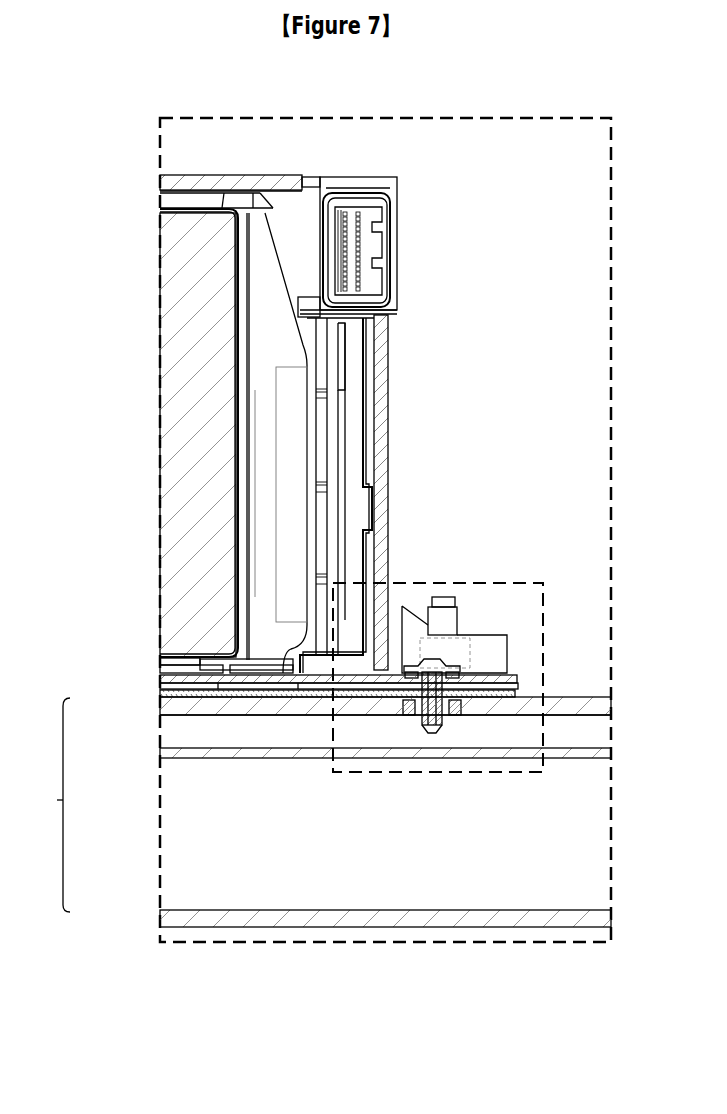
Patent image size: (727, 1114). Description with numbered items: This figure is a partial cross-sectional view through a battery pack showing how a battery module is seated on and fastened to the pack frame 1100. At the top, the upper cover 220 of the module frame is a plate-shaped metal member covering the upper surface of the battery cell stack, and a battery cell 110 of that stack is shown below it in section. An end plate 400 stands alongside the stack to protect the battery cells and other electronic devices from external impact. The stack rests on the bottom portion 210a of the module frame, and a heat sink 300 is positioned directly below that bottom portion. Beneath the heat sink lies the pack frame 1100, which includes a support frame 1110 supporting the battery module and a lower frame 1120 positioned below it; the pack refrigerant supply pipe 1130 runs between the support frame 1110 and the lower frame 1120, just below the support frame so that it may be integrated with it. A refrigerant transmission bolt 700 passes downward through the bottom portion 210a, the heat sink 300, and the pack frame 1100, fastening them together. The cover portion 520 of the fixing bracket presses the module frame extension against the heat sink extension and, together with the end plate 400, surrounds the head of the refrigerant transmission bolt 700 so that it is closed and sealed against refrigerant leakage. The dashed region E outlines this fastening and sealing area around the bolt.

The battery cell 110 is at (188, 352).
The upper cover 220 is at (176, 182).
The end plate 400 is at (386, 351).
The refrigerant transmission bolt 700 is at (413, 658).
The cover portion 520 is at (496, 637).
The bottom portion 210a is at (158, 673).
The heat sink 300 is at (160, 694).
The support frame 1110 is at (174, 708).
The pack refrigerant supply pipe 1130 is at (176, 737).
The lower frame 1120 is at (171, 918).
The pack frame 1100 is at (42, 805).
The enlarged region E is at (543, 645).